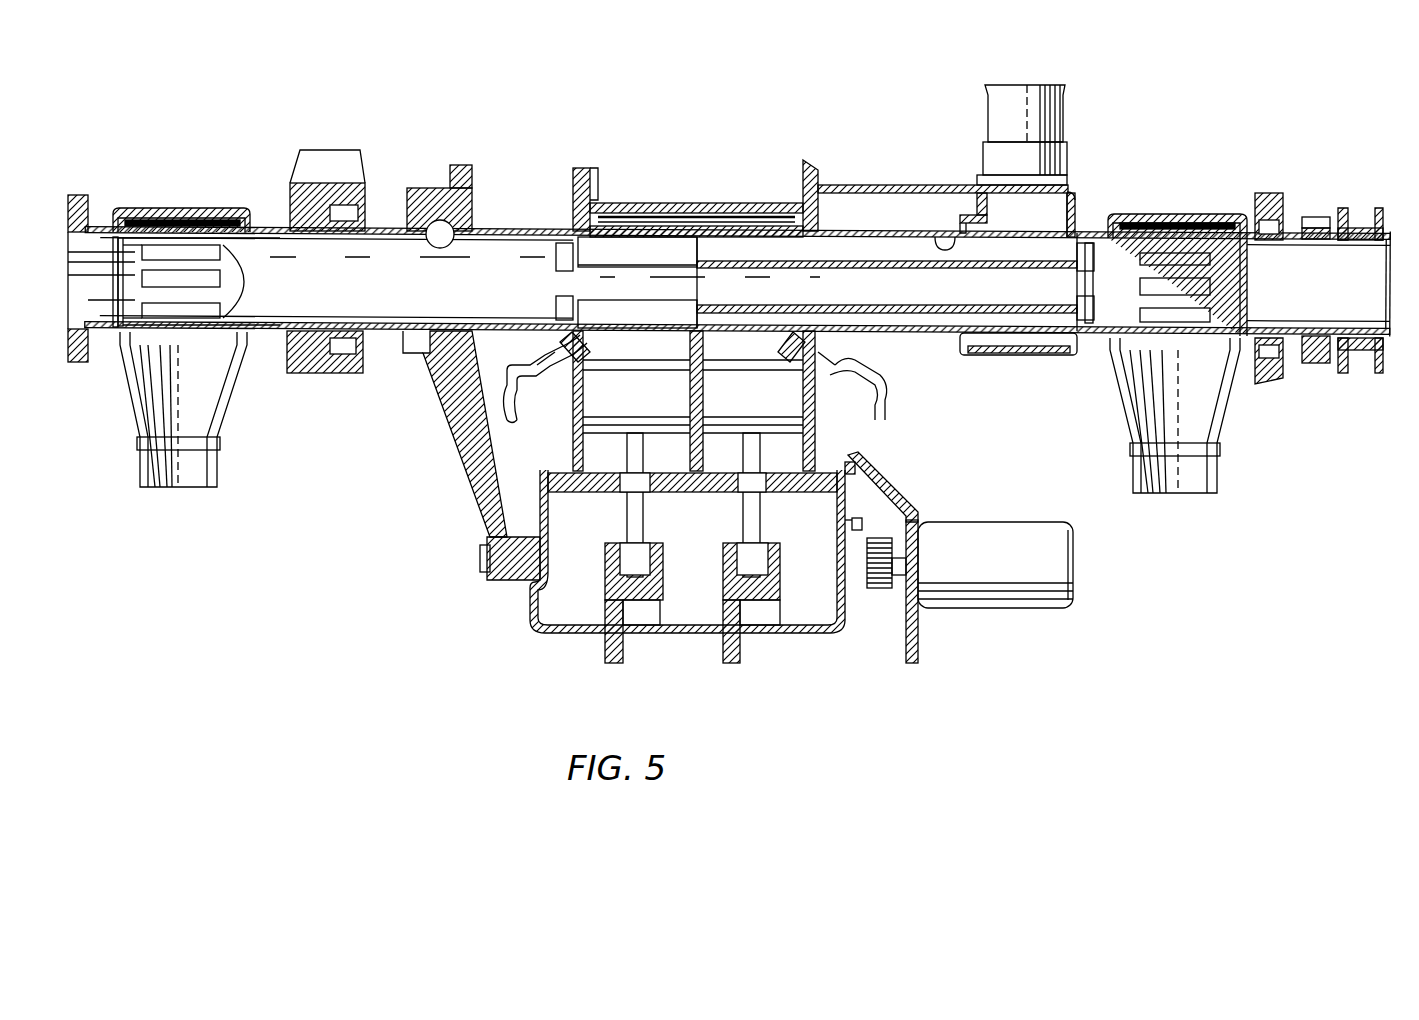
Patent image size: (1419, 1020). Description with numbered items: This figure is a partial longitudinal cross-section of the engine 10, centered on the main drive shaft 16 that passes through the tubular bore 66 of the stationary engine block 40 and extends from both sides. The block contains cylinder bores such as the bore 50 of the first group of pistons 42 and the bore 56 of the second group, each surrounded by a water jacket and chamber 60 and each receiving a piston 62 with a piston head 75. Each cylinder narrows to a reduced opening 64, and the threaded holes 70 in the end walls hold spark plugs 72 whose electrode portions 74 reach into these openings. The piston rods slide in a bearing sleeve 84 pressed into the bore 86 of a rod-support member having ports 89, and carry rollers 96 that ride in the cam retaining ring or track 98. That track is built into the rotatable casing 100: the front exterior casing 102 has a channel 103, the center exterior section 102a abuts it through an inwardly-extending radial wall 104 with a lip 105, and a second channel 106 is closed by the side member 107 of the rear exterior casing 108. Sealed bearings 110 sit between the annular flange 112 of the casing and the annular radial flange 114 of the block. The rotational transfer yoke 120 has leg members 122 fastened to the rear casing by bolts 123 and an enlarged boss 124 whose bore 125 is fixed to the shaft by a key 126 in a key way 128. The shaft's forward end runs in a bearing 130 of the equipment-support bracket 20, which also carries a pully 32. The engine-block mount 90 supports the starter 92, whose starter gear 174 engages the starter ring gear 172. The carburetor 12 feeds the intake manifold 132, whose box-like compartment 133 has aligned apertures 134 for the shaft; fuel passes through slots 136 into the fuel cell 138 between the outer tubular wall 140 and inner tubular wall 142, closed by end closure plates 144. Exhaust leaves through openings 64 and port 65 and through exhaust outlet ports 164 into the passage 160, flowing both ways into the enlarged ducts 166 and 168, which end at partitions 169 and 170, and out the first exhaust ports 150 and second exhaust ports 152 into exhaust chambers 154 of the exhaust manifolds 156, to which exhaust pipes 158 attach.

The engine 10 is at (755, 106).
The carburetor 12 is at (1068, 128).
The main drive shaft 16 is at (270, 231).
The equipment-support bracket 20 is at (1268, 193).
The pully 32 is at (330, 150).
The engine block 40 is at (802, 160).
The first group of pistons 42 is at (875, 395).
The cylinder bore 50 is at (858, 455).
The cylinder bore 56 is at (573, 448).
The water jacket and chamber 60 is at (572, 398).
The piston 62 is at (720, 408).
The reduced opening 64 is at (722, 350).
The port 65 is at (650, 322).
The tubular bore 66 is at (635, 250).
The threaded hole 70 is at (565, 345).
The spark plug 72 is at (540, 368).
The electrode portion 74 is at (620, 345).
The piston head 75 is at (612, 412).
The bearing sleeve 84 is at (650, 493).
The bore 86 is at (622, 495).
The ports 89 is at (605, 492).
The engine-block mount 90 is at (918, 645).
The starter 92 is at (1008, 582).
The rollers 96 is at (620, 568).
The cam retaining ring or track 98 is at (626, 583).
The exterior housing or casing 100 is at (528, 608).
The front exterior casing 102 is at (815, 636).
The center exterior section 102a is at (680, 640).
The channel 103 is at (765, 565).
The inwardly-extending radial wall 104 is at (705, 632).
The lip 105 is at (650, 490).
The channel 106 is at (628, 598).
The side member 107 is at (612, 590).
The rear exterior casing 108 is at (545, 628).
The sealed bearings 110 is at (545, 487).
The annular flange 112 is at (540, 472).
The annular radial flange 114 is at (560, 522).
The rotational transfer yoke 120 is at (448, 412).
The leg member 122 is at (455, 200).
The bolt 123 is at (480, 556).
The enlarged boss 124 is at (415, 210).
The bore 125 is at (425, 330).
The key 126 is at (472, 205).
The key way 128 is at (432, 245).
The bearing 130 is at (345, 350).
The intake manifold 132 is at (1008, 358).
The box-like compartment 133 is at (1035, 355).
The aligned apertures 134 is at (940, 236).
The elongated openings or slots 136 is at (1005, 305).
The fuel cell 138 is at (762, 245).
The outer tubular wall 140 is at (862, 235).
The inner tubular wall 142 is at (870, 262).
The end closure plates 144 is at (556, 250).
The first set of exhaust ports 150 is at (1172, 255).
The second set of exhaust ports 152 is at (210, 255).
The exhaust chamber 154 is at (190, 220).
The exhaust manifold 156 is at (140, 208).
The exhaust pipe 158 is at (150, 470).
The passage 160 is at (556, 291).
The exhaust outlet ports 164 is at (612, 240).
The enlarged duct 166 is at (1092, 336).
The enlarged duct 168 is at (343, 270).
The partition 169 is at (1212, 270).
The partition 170 is at (112, 325).
The starter ring gear 172 is at (862, 524).
The starter gear 174 is at (882, 592).